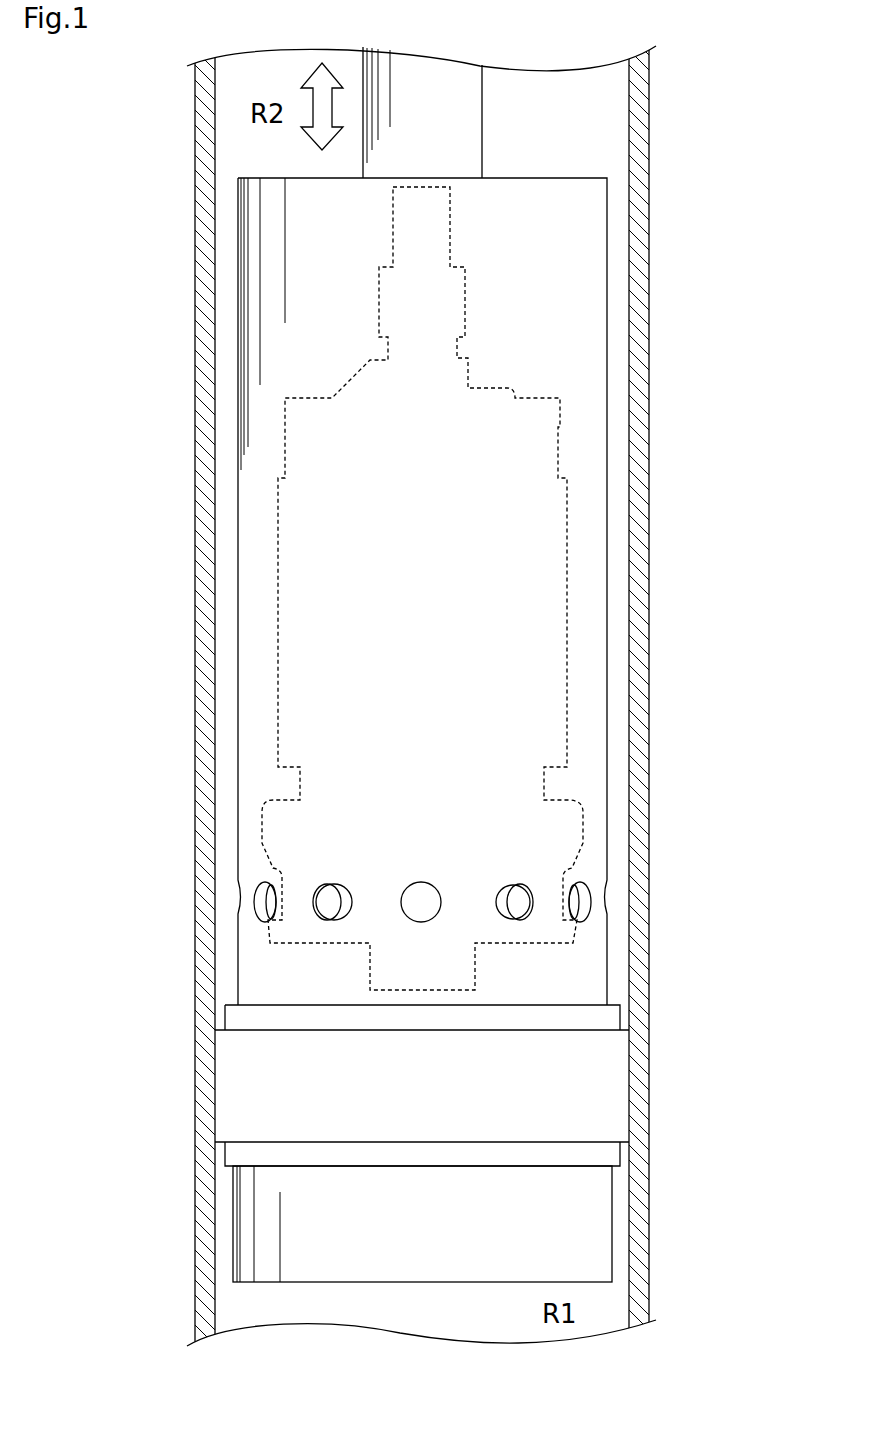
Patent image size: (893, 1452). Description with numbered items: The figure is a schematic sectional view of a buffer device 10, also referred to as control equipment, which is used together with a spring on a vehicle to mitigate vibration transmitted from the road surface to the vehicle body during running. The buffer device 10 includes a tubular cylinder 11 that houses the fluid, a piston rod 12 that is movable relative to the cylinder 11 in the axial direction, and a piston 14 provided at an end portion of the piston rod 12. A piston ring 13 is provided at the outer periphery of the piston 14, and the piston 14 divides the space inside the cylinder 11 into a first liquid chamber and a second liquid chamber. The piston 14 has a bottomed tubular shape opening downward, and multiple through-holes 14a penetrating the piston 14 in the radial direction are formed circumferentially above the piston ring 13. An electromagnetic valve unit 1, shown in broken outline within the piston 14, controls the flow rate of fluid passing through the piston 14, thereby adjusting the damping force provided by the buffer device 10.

The electromagnetic valve unit 1 is at (537, 385).
The buffer device 10 is at (684, 106).
The cylinder 11 is at (642, 218).
The piston rod 12 is at (455, 117).
The piston ring 13 is at (583, 1086).
The piston 14 is at (583, 573).
The through-holes 14a is at (500, 895).